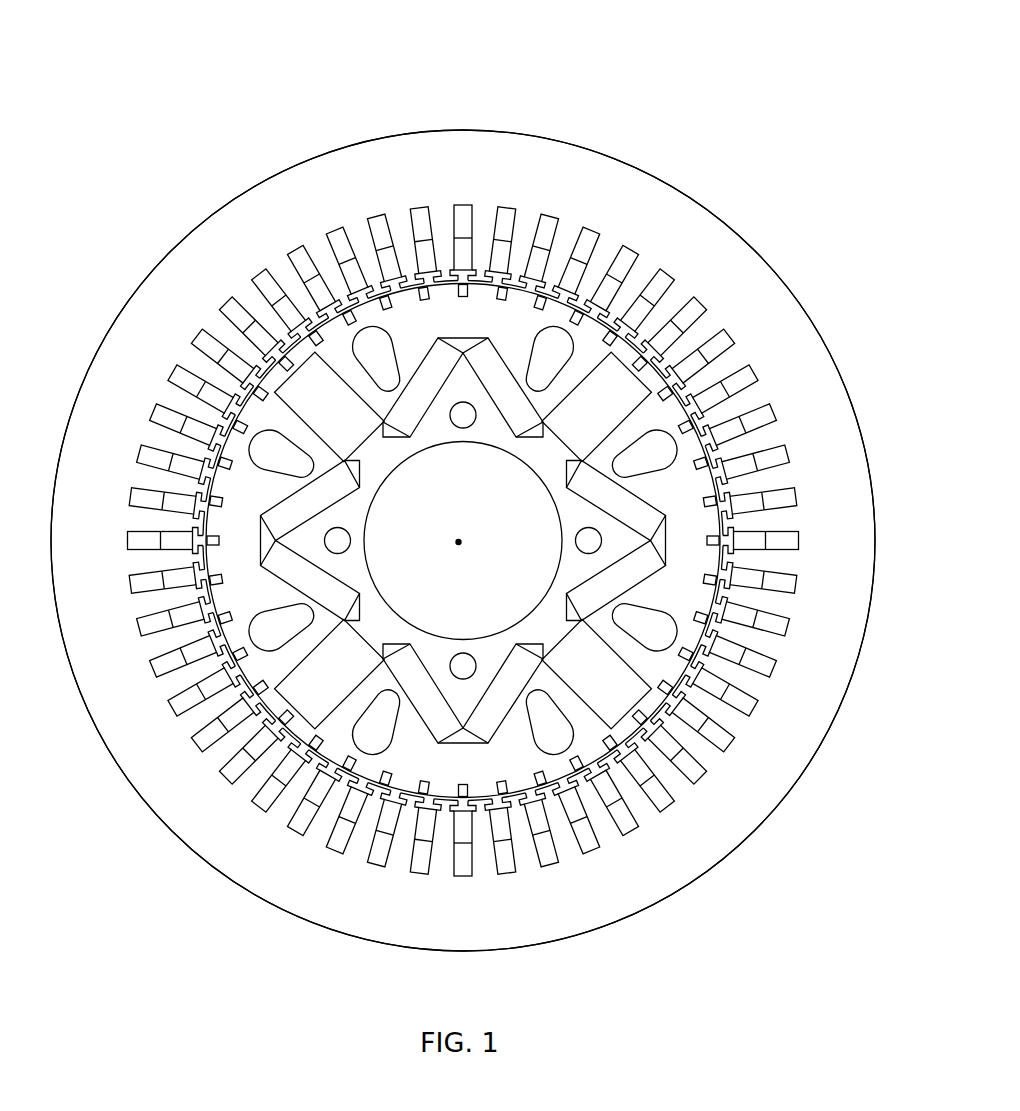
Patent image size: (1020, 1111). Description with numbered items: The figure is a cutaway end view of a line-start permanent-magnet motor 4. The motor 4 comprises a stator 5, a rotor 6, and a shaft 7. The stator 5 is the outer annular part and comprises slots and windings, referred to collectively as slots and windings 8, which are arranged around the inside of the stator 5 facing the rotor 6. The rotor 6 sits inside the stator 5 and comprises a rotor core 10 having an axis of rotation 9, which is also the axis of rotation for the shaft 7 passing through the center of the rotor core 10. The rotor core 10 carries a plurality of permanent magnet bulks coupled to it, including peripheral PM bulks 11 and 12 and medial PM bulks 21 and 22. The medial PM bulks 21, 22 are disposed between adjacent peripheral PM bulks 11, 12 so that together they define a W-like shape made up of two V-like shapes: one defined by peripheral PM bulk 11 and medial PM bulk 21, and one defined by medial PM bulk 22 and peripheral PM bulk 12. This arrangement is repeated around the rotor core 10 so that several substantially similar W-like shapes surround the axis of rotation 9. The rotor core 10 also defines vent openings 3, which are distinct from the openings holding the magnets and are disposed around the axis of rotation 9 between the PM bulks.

The vent opening 3 is at (375, 333).
The line-start permanent-magnet motor 4 is at (730, 925).
The stator 5 is at (762, 275).
The rotor 6 is at (338, 738).
The shaft 7 is at (455, 503).
The slots and windings 8 is at (731, 719).
The axis of rotation 9 is at (461, 545).
The rotor core 10 is at (683, 488).
The peripheral PM bulk 11 is at (320, 385).
The peripheral PM bulk 12 is at (600, 372).
The medial PM bulk 21 is at (440, 353).
The medial PM bulk 22 is at (485, 362).